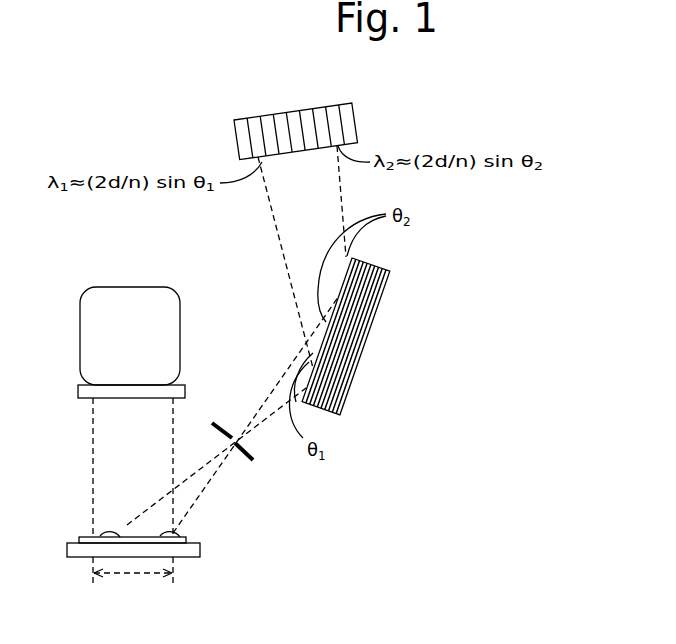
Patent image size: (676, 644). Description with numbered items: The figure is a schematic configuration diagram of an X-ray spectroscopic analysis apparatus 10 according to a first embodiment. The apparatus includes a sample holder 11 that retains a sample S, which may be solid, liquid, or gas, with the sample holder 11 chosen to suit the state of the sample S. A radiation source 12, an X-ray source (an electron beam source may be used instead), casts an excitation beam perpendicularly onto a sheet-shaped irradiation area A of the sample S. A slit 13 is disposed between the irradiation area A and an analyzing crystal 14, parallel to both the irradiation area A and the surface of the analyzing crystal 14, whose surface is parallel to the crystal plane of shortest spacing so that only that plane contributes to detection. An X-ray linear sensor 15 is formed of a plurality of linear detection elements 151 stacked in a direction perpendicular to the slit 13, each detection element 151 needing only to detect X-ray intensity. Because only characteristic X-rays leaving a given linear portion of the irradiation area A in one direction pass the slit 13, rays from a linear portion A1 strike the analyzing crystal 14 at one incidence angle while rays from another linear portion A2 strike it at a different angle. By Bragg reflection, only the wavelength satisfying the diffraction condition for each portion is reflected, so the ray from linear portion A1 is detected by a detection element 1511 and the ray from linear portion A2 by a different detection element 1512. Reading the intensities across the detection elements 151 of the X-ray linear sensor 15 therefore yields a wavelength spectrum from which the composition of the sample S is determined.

The X-ray spectroscopic analysis apparatus 10 is at (358, 515).
The sample holder 11 is at (200, 547).
The radiation source 12 is at (102, 318).
The slit 13 is at (247, 463).
The analyzing crystal 14 is at (358, 328).
The X-ray linear sensor 15 is at (305, 115).
The detection element 151 is at (308, 127).
The detection element 1511 is at (255, 138).
The detection element 1512 is at (332, 116).
The sample S is at (130, 537).
The irradiation area A is at (133, 582).
The linear portion A1 is at (105, 537).
The linear portion A2 is at (163, 535).